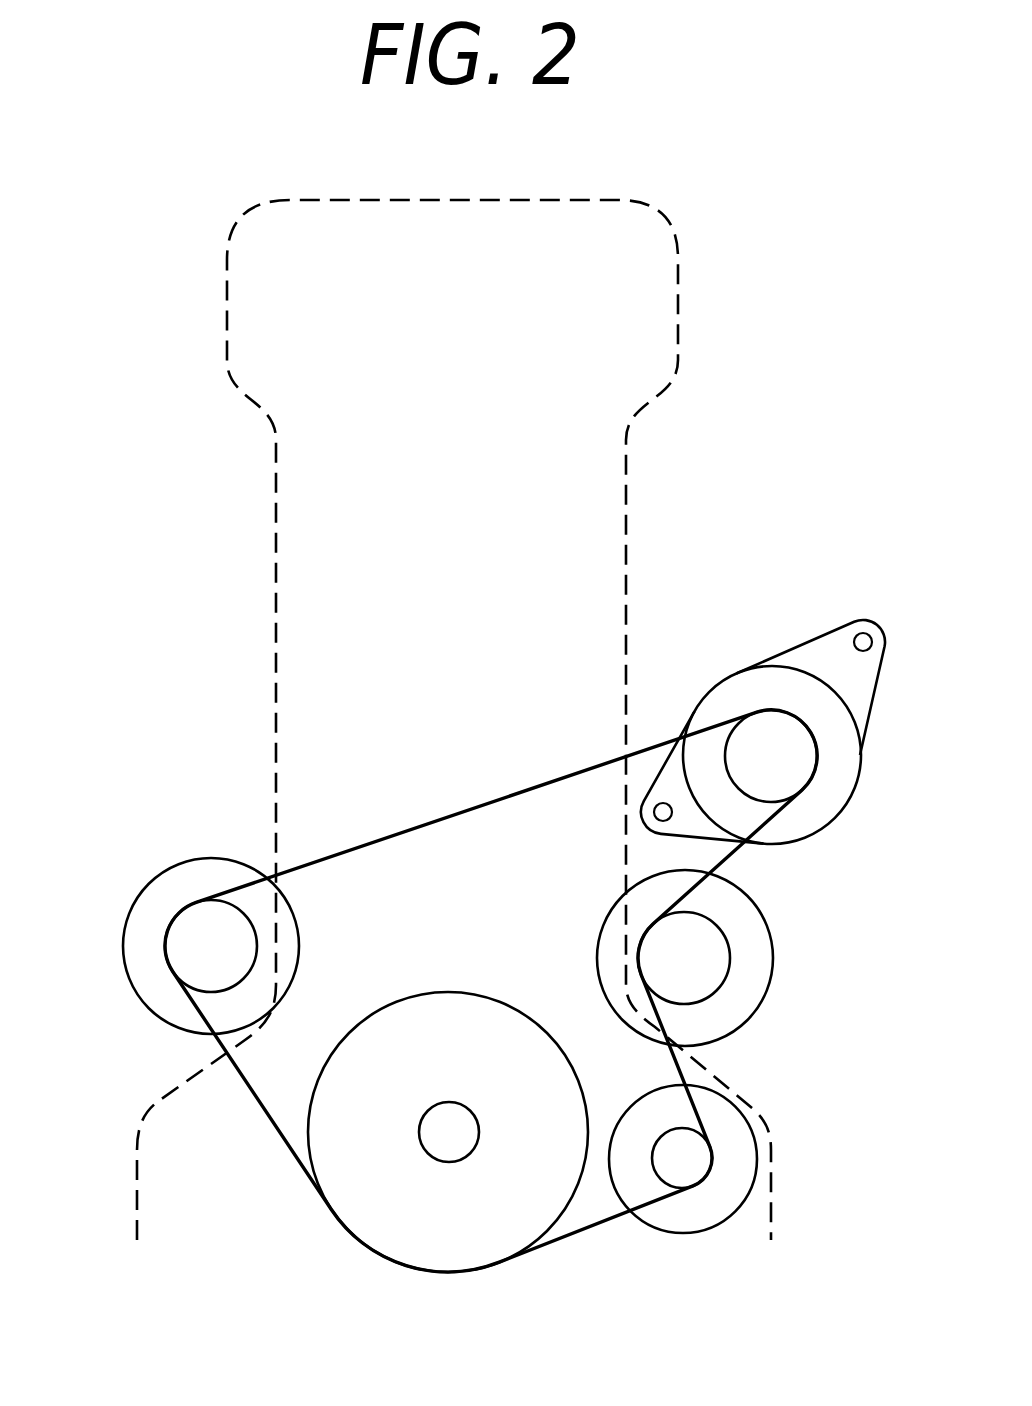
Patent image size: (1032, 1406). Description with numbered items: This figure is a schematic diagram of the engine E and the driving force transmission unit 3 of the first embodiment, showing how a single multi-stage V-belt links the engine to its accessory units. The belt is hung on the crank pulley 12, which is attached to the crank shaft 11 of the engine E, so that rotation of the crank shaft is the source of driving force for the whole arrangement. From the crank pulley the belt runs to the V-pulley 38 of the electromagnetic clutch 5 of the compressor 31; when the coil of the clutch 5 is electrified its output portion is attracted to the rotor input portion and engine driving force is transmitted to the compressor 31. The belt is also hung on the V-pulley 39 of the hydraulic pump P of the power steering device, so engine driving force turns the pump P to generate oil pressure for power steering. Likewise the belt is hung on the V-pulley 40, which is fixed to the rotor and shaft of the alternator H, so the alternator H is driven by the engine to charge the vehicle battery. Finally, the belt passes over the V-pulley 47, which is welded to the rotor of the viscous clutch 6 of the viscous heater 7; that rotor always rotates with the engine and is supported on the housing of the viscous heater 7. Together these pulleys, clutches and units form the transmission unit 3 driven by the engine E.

The engine E is at (682, 258).
The driving force transmission unit 3 is at (658, 680).
The electromagnetic clutch 5 is at (185, 907).
The compressor 31 is at (197, 873).
The V-pulley 38 is at (185, 940).
The crank shaft 11 is at (445, 1140).
The crank pulley 12 is at (487, 1233).
The alternator H is at (757, 683).
The V-pulley 40 is at (797, 765).
The electromagnetic clutch (viscous clutch) 6 is at (718, 990).
The viscous heater 7 is at (724, 969).
The V-pulley 47 is at (710, 943).
The hydraulic pump P is at (737, 1165).
The V-pulley 39 is at (688, 1168).